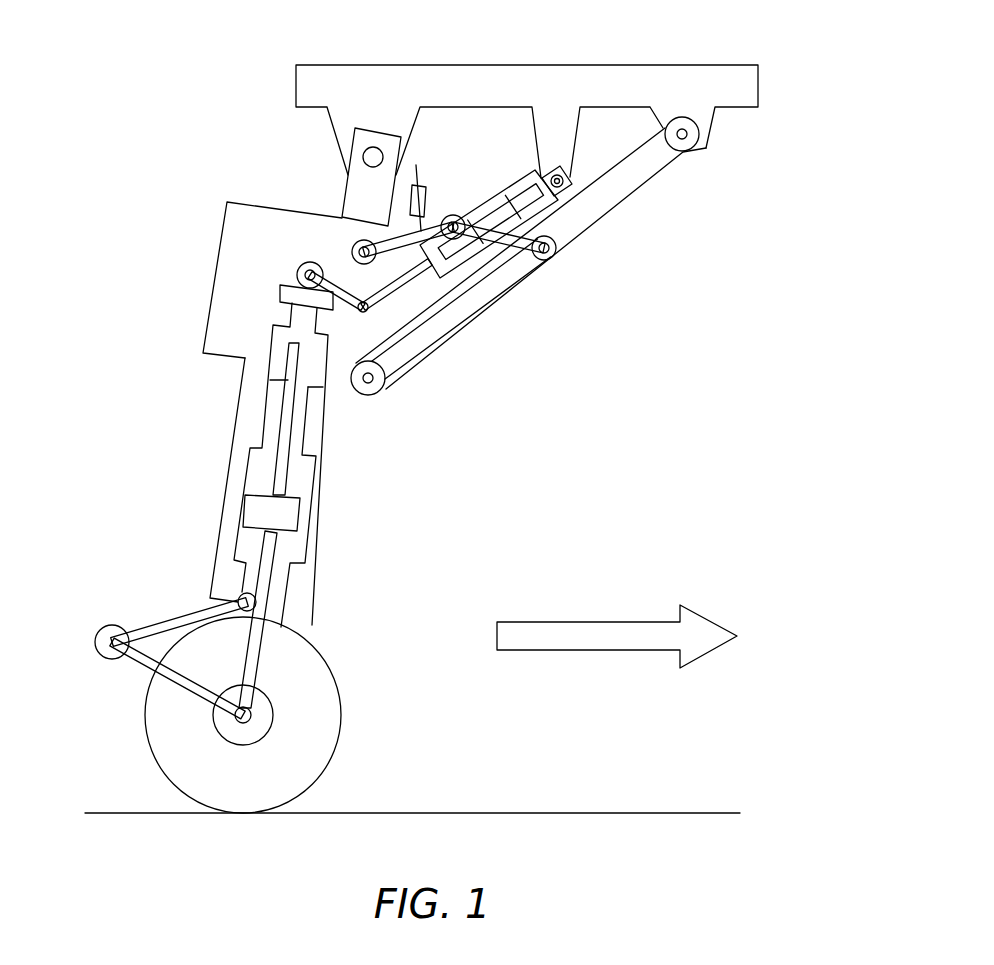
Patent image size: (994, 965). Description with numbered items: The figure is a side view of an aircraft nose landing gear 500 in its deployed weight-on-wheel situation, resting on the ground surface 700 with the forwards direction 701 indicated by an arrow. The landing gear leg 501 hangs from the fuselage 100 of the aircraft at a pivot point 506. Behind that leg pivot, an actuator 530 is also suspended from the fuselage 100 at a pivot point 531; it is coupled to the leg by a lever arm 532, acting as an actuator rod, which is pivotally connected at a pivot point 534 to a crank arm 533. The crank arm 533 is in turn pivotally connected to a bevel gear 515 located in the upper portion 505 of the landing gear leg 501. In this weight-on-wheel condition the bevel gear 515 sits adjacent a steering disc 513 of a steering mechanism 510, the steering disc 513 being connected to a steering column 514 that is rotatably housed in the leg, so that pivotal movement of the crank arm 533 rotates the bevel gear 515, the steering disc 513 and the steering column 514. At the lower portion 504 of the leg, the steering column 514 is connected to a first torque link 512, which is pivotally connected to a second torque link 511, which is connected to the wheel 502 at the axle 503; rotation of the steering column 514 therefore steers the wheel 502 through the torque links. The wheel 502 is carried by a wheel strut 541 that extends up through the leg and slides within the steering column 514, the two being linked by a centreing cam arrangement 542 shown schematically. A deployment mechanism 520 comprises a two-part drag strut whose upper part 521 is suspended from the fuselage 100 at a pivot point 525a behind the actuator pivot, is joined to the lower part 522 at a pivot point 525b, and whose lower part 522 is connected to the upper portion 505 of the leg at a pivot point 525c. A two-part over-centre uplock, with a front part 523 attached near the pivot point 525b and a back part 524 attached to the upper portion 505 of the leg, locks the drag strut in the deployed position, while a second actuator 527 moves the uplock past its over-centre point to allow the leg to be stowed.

The fuselage 100 is at (505, 65).
The aircraft nose landing gear 500 is at (201, 237).
The landing gear leg 501 is at (233, 470).
The wheel 502 is at (320, 762).
The axle 503 is at (278, 698).
The lower portion of the landing gear leg 504 is at (318, 563).
The upper portion of the landing gear leg 505 is at (224, 226).
The pivot point 506 is at (363, 157).
The steering mechanism 510 is at (180, 584).
The second torque link 511 is at (138, 663).
The first torque link 512 is at (160, 624).
The steering disc 513 is at (280, 294).
The steering column 514 is at (271, 350).
The bevel gear 515 is at (297, 276).
The deployment mechanism 520 is at (545, 305).
The upper part of the drag strut 521 is at (645, 172).
The lower part of the drag strut 522 is at (463, 315).
The front part of the uplock 523 is at (504, 243).
The back part of the uplock 524 is at (383, 243).
The pivot point 525a is at (699, 137).
The pivot point 525b is at (550, 259).
The pivot point 525c is at (379, 392).
The second actuator 527 is at (428, 197).
The actuator 530 is at (520, 182).
The pivot point 531 is at (566, 183).
The lever arm 532 is at (413, 277).
The crank arm 533 is at (338, 290).
The pivot point 534 is at (368, 313).
The wheel strut 541 is at (291, 431).
The centreing cam arrangement 542 is at (299, 515).
The ground surface 700 is at (593, 813).
The forwards direction 701 is at (588, 622).